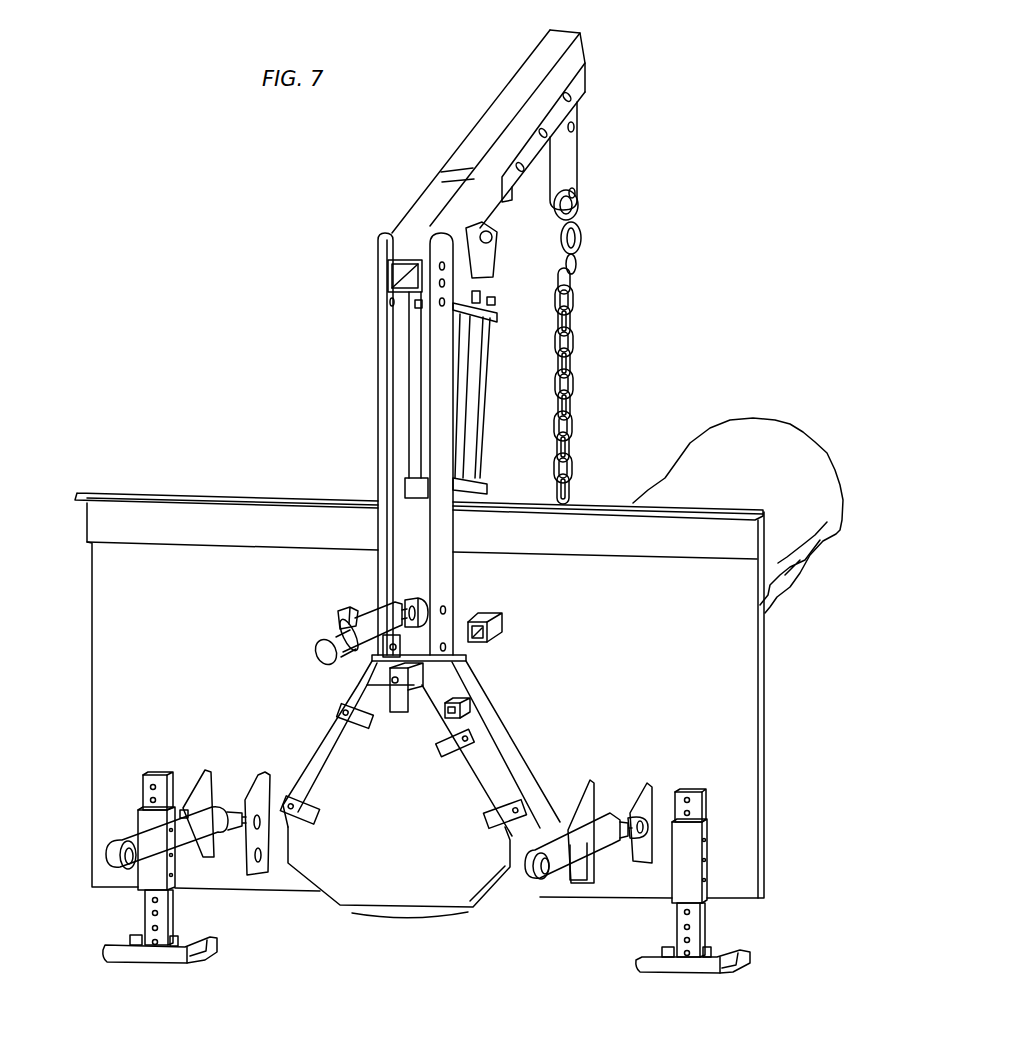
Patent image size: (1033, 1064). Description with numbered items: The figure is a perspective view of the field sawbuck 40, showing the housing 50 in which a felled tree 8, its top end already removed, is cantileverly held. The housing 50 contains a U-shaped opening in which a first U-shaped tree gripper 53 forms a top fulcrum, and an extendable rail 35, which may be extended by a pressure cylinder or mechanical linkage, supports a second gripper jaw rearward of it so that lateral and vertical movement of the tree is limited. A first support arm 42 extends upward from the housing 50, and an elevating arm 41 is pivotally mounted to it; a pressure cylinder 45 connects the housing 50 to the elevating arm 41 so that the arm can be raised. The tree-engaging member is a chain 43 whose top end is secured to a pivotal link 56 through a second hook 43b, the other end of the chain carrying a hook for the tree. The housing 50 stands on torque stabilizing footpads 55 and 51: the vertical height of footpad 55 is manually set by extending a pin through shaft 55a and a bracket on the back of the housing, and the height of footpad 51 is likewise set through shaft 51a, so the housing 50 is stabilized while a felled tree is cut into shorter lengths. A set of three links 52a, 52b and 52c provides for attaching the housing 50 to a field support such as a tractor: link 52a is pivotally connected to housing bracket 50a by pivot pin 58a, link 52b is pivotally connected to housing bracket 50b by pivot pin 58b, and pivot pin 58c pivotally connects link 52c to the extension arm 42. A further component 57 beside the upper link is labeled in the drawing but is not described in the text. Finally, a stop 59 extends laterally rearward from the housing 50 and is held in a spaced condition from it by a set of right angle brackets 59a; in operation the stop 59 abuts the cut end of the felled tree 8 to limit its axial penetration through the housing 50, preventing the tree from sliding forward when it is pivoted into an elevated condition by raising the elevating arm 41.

The felled tree 8 is at (703, 468).
The extendable rail 35 is at (487, 613).
The field sawbuck 40 is at (245, 342).
The elevating arm 41 is at (510, 100).
The first support arm 42 is at (383, 402).
The chain 43 is at (573, 372).
The second hook 43b is at (580, 268).
The pressure cylinder 45 is at (480, 390).
The housing 50 is at (742, 657).
The housing bracket 50a is at (640, 785).
The housing bracket 50b is at (200, 770).
The footpad 51 is at (147, 963).
The shaft 51a is at (172, 913).
The link 52a is at (557, 877).
The link 52b is at (142, 853).
The link 52c is at (377, 623).
The first U-shaped tree gripper 53 is at (503, 750).
The footpad 55 is at (673, 975).
The shaft 55a is at (707, 922).
The pivotal link 56 is at (570, 160).
The top link cylinder 57 is at (377, 618).
The pivot pin 58a is at (653, 810).
The pivot pin 58b is at (247, 775).
The pivot pin 58c is at (438, 607).
The stop 59 is at (420, 887).
The right angle bracket 59a is at (483, 823).